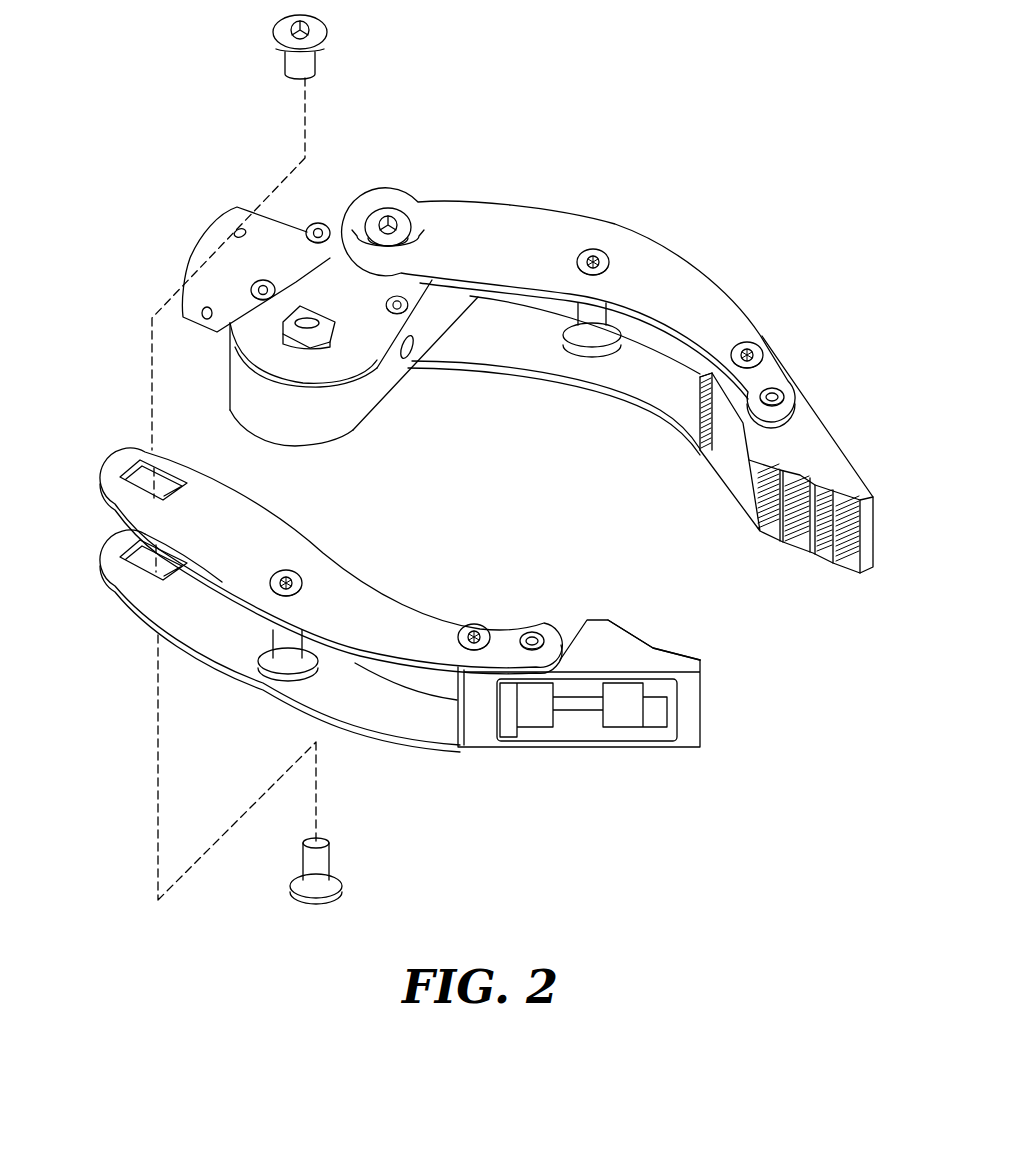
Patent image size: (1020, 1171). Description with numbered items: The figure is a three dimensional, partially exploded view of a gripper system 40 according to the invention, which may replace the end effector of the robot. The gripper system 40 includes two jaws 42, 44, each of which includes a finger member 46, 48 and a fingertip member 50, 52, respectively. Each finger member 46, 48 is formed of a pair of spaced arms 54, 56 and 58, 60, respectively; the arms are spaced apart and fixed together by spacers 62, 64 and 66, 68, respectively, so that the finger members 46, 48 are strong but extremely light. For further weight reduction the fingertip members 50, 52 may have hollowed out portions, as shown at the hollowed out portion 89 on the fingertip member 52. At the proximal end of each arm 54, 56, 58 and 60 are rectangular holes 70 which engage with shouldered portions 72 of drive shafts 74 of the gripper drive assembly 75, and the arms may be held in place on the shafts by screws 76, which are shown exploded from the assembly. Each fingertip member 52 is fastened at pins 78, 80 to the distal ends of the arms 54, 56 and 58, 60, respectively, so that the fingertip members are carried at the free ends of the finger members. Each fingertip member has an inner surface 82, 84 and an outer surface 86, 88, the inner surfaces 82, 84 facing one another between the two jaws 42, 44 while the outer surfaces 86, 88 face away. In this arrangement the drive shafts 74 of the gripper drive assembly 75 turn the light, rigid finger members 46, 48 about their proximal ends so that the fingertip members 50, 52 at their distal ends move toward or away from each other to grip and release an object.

The gripper system 40 is at (624, 88).
The jaw 42 is at (698, 183).
The jaw 44 is at (116, 612).
The finger member 46 is at (720, 285).
The finger member 48 is at (233, 708).
The fingertip member 50 is at (860, 445).
The fingertip member 52 is at (583, 750).
The arm 54 is at (506, 268).
The arm 56 is at (499, 351).
The arm 58 is at (353, 718).
The arm 60 is at (353, 635).
The spacer 62 is at (594, 250).
The spacer 64 is at (750, 344).
The spacer 66 is at (287, 577).
The spacer 68 is at (474, 632).
The rectangular hole 70 is at (418, 238).
The shouldered portion 72 is at (423, 243).
The drive shaft 74 is at (308, 322).
The gripper drive assembly 75 is at (334, 186).
The screw 76 is at (327, 33).
The pin 78 is at (776, 394).
The pin 80 is at (532, 636).
The inner surface 82 is at (720, 458).
The inner surface 84 is at (591, 620).
The outer surface 86 is at (805, 540).
The outer surface 88 is at (665, 645).
The hollowed out portion 89 is at (620, 730).